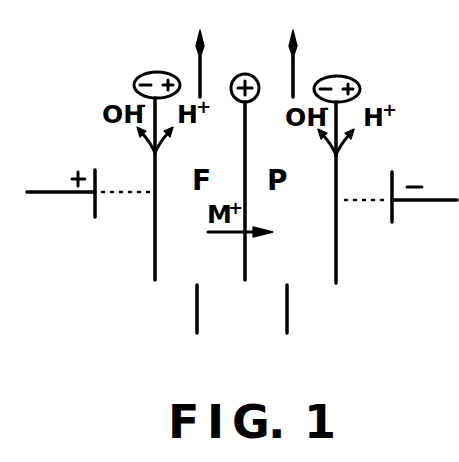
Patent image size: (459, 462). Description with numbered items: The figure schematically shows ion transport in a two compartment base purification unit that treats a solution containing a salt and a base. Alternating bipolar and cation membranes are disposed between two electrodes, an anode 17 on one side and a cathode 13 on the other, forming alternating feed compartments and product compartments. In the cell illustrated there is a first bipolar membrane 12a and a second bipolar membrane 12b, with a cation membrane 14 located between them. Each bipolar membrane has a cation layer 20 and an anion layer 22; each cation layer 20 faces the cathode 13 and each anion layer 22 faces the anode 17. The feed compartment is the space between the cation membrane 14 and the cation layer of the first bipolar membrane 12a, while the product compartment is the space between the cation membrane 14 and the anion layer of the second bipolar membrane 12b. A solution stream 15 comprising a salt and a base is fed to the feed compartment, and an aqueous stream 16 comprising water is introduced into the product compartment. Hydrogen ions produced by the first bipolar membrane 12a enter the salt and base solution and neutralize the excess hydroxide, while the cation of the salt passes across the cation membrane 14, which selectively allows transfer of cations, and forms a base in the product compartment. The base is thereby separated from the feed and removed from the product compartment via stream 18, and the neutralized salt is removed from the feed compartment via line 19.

The first bipolar membrane 12a is at (157, 266).
The second bipolar membrane 12b is at (338, 268).
The cathode 13 is at (396, 208).
The cation membrane 14 is at (247, 267).
The solution stream 15 is at (199, 308).
The aqueous stream 16 is at (289, 308).
The anode 17 is at (93, 207).
The stream 18 is at (295, 65).
The line 19 is at (202, 63).
The cation layer 20 is at (158, 160).
The anion layer 22 is at (153, 177).